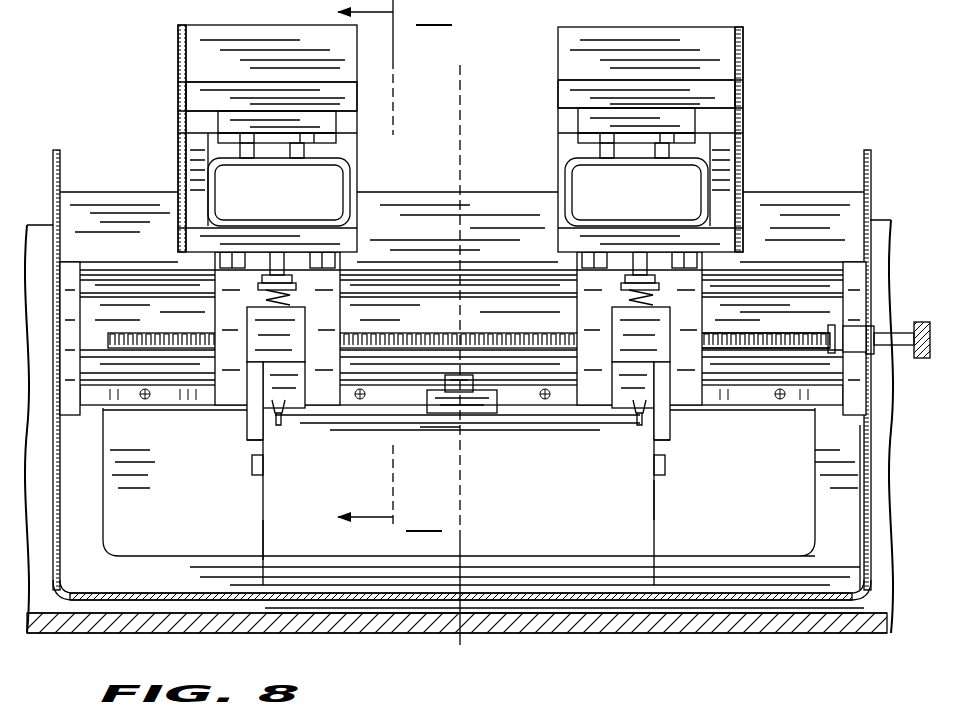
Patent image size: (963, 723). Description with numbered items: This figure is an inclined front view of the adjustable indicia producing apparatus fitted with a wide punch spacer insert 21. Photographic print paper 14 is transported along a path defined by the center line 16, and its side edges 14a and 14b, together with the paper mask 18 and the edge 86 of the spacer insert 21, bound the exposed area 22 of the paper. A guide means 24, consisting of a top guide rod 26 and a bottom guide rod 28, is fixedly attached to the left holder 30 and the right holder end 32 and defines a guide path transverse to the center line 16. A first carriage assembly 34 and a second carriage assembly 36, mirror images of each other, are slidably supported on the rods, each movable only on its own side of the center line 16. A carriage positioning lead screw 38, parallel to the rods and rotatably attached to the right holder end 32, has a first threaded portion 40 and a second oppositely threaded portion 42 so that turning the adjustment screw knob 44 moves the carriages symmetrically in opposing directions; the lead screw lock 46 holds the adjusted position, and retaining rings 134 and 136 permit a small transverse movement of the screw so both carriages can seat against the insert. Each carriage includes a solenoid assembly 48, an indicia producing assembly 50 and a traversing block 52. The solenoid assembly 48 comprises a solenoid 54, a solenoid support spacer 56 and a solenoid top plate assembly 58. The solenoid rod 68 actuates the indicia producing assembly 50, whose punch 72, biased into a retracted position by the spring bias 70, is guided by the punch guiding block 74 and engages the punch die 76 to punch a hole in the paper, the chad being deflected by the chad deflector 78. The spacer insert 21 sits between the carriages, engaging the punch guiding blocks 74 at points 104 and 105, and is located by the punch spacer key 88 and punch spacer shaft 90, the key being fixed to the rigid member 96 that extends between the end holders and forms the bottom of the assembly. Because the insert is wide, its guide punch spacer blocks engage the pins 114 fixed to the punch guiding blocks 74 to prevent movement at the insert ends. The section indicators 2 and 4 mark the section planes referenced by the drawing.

The section line 2 is at (455, 134).
The section line 4- 4 is at (395, 266).
The photographic print paper 14 is at (340, 550).
The side edge 14a is at (654, 500).
The side edge 14b is at (263, 540).
The center line 16 is at (462, 110).
The paper mask 18 is at (80, 529).
The punch spacer insert 21 is at (428, 430).
The exposed area 22 is at (625, 550).
The guide means 24 is at (433, 292).
The top guide rod 26 is at (395, 280).
The bottom guide rod 28 is at (183, 366).
The left holder 30 is at (72, 280).
The right holder end 32 is at (862, 412).
The first carriage assembly 34 is at (750, 19).
The second carriage assembly 36 is at (362, 64).
The carriage positioning lead screw 38 is at (508, 334).
The first threaded portion 40 is at (790, 350).
The second oppositely threaded portion 42 is at (148, 338).
The adjustment screw knob 44 is at (928, 342).
The lead screw lock 46 is at (866, 330).
The solenoid assembly 48 is at (362, 128).
The indicia producing assembly 50 is at (306, 362).
The traversing block 52 is at (318, 332).
The solenoid 54 is at (322, 206).
The solenoid support spacer 56 is at (193, 150).
The solenoid top plate assembly 58 is at (208, 90).
The solenoid rod 68 is at (279, 262).
The spring bias 70 is at (300, 298).
The punch 72 is at (281, 426).
The punch guiding block 74 is at (268, 320).
The punch die 76 is at (250, 460).
The chad deflector 78 is at (258, 482).
The edge 86 is at (543, 426).
The punch spacer key 88 is at (462, 386).
The punch spacer shaft 90 is at (435, 386).
The rigid member 96 is at (760, 390).
The point 104 is at (655, 442).
The point 105 is at (258, 428).
The pins 114 is at (312, 400).
The retaining ring 134 is at (868, 362).
The retaining ring 136 is at (832, 326).